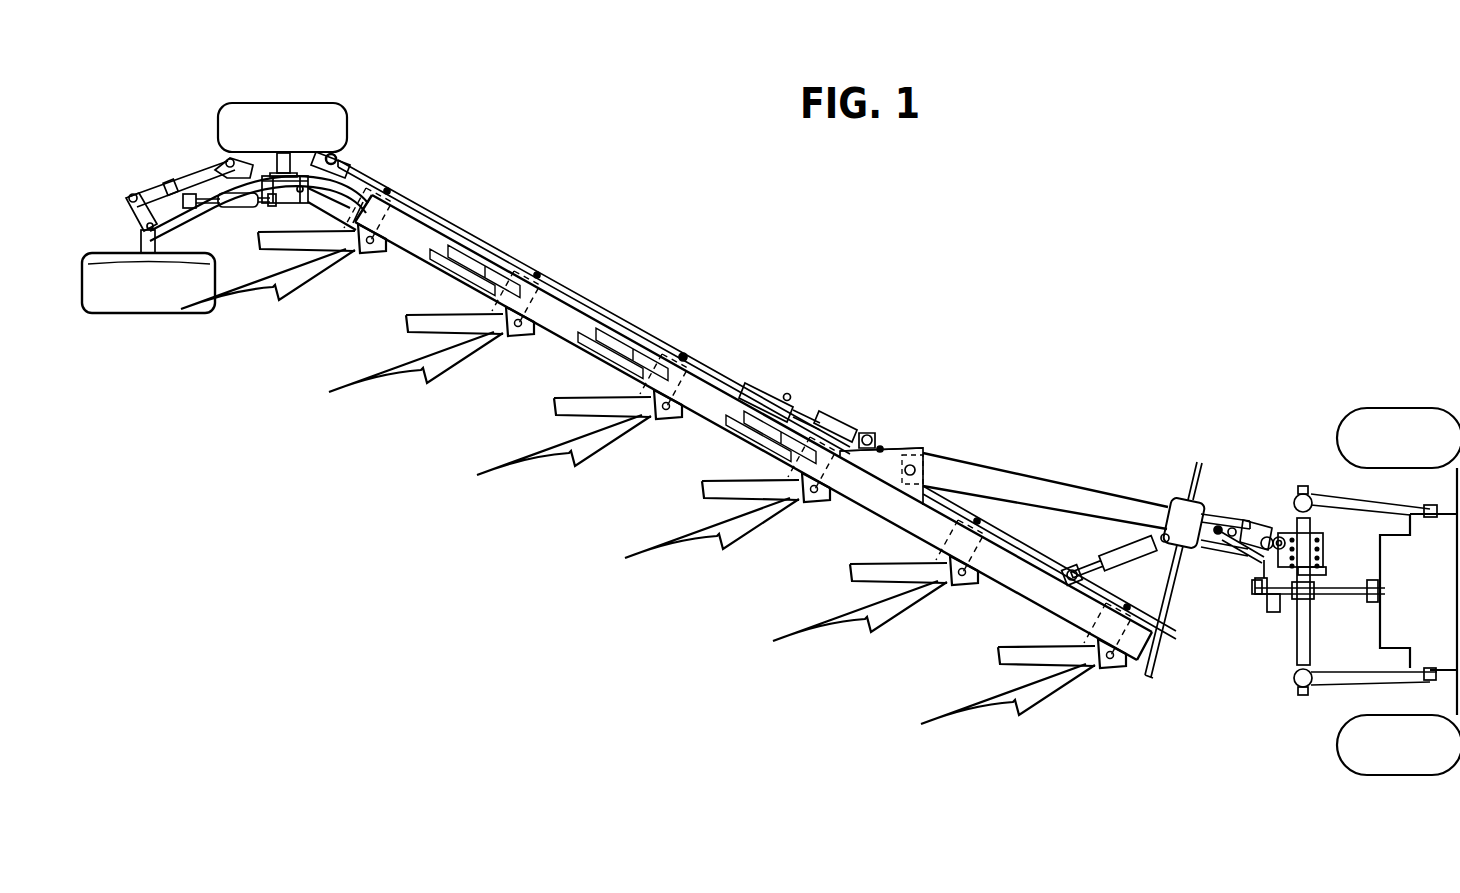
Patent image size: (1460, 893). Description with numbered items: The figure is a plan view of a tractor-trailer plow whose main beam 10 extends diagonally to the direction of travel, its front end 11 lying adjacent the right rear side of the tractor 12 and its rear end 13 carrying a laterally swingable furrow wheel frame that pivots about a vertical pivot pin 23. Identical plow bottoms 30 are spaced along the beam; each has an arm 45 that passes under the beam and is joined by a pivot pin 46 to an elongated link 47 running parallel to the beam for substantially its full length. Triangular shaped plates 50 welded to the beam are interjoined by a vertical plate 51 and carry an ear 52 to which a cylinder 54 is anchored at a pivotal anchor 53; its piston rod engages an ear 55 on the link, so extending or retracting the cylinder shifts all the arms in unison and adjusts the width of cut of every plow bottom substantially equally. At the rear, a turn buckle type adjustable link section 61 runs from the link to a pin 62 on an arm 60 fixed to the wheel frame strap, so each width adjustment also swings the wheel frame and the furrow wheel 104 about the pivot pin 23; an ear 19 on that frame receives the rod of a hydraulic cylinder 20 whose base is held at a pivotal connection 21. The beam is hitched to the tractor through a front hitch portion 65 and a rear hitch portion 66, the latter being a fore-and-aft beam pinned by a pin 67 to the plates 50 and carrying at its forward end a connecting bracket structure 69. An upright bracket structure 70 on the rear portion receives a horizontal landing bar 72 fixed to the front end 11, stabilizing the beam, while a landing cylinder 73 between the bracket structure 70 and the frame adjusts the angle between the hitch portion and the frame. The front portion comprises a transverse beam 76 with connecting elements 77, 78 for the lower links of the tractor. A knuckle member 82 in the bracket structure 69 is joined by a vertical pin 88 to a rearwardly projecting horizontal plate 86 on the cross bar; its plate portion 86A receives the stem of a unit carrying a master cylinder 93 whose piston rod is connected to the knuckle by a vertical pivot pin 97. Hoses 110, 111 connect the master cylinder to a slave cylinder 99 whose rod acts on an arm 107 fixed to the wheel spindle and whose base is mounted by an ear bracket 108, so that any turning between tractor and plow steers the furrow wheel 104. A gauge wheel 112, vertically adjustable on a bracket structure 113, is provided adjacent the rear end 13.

The main beam 10 is at (712, 412).
The front end 11 is at (1133, 648).
The tractor 12 is at (1418, 402).
The rear end 13 is at (303, 173).
The ear 19 is at (191, 208).
The hydraulic cylinder 20 is at (234, 206).
The pivotal connection 21 is at (268, 206).
The pivot pin 23 is at (308, 205).
The plow bottoms 30 is at (656, 545).
The arm 45 is at (398, 206).
The pivot pin 46 is at (683, 352).
The elongated link 47 is at (712, 370).
The triangular shaped plates 50 is at (925, 452).
The vertical plate 51 is at (912, 448).
The ear 52 is at (882, 447).
The pivotal anchor 53 is at (870, 435).
The cylinder 54 is at (830, 418).
The ear 55 is at (770, 390).
The arm 60 is at (333, 150).
The adjustable link section 61 is at (363, 178).
The pin 62 is at (337, 157).
The front hitch portion 65 is at (1317, 640).
The rear hitch portion 66 is at (1038, 488).
The pin 67 is at (903, 472).
The connecting bracket structure 69 is at (1222, 512).
The upright bracket structure 70 is at (1190, 497).
The landing bar 72 is at (1167, 612).
The landing cylinder 73 is at (1127, 548).
The transverse beam 76 is at (1311, 627).
The connecting element 77 is at (1312, 500).
The connecting element 78 is at (1303, 688).
The knuckle member 82 is at (1258, 525).
The horizontal plate 86 is at (1325, 540).
The plate portion 86A is at (1326, 571).
The vertical pin 88 is at (1284, 537).
The master cylinder 93 is at (1273, 612).
The vertical pivot pin 97 is at (1268, 537).
The slave cylinder 99 is at (184, 162).
The furrow wheel 104 is at (152, 305).
The arm 107 is at (130, 214).
The ear bracket 108 is at (238, 158).
The hose 110 is at (177, 185).
The hose 111 is at (213, 170).
The gauge wheel 112 is at (227, 110).
The bracket structure 113 is at (272, 150).